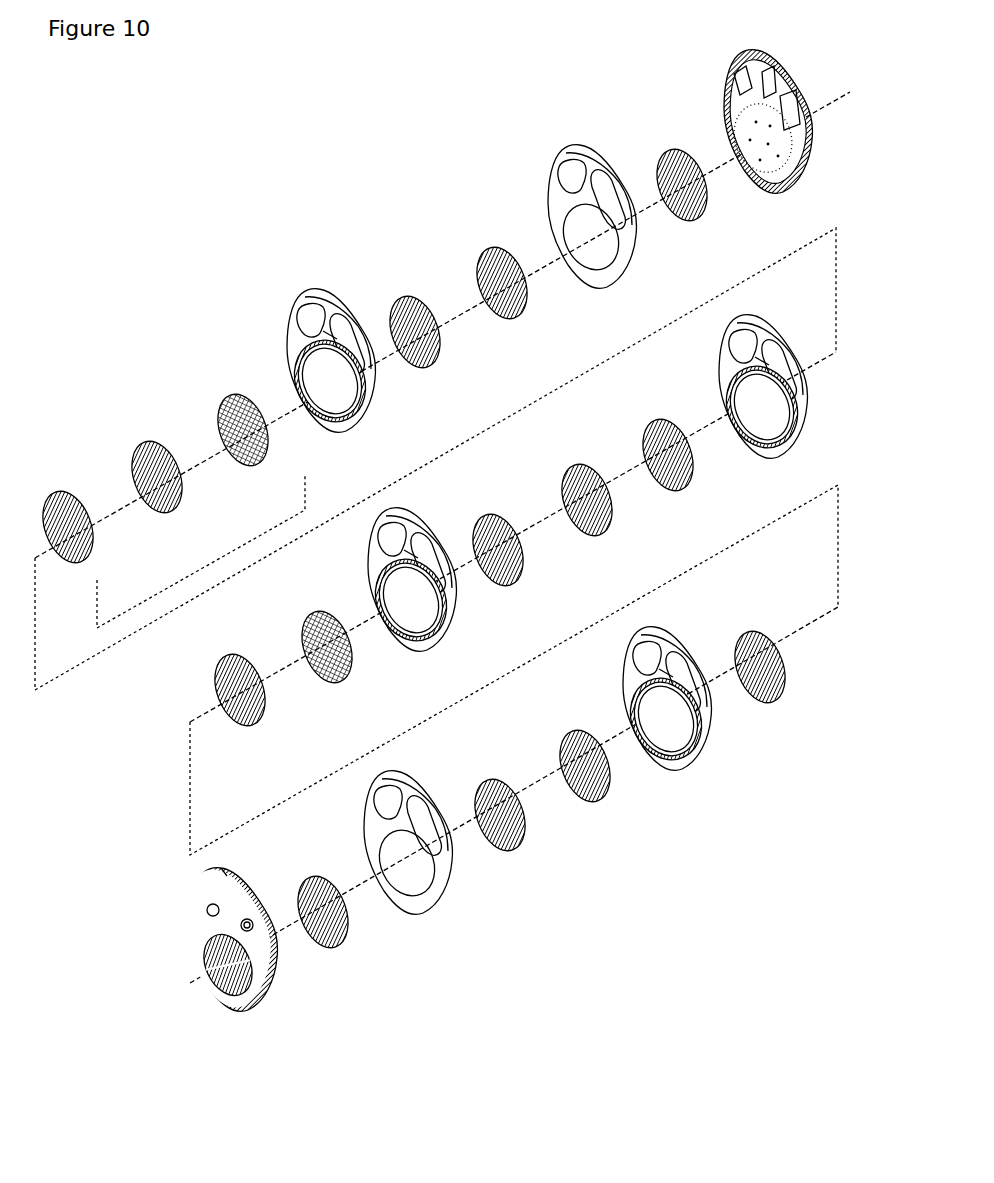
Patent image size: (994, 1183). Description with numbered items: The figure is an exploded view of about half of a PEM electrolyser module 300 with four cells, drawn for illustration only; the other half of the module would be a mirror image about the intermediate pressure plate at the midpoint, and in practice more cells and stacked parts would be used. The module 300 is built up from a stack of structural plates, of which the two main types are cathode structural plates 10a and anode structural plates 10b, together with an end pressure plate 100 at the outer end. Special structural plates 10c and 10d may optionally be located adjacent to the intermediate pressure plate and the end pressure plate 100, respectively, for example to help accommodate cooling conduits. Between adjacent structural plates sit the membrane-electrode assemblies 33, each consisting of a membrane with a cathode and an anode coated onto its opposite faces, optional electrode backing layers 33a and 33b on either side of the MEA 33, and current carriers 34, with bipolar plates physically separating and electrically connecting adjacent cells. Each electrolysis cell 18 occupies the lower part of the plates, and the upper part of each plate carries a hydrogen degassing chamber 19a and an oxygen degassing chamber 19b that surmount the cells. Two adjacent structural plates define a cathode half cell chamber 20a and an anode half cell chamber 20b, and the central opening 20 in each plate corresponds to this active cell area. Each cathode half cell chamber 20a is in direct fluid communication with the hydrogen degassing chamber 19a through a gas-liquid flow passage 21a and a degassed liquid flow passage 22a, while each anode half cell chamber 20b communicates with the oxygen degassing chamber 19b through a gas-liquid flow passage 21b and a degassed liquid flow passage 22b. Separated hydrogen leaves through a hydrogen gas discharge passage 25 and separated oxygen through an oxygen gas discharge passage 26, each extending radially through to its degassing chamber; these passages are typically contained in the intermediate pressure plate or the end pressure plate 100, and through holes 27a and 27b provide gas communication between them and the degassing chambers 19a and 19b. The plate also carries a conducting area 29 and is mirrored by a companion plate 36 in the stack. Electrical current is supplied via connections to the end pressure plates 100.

The PEM electrolyser module 300 is at (442, 537).
The end pressure plate 100 is at (788, 190).
The cathode structural plate 10a is at (775, 455).
The anode structural plate 10b is at (322, 420).
The special structural plate 10c is at (425, 908).
The special structural plate 10d is at (622, 274).
The hydrogen degassing chamber 19a is at (300, 312).
The oxygen degassing chamber 19b is at (340, 330).
The heel opening 20 is at (499, 550).
The cathode half cell chamber 20a is at (786, 452).
The anode half cell chamber 20b is at (348, 432).
The gas-liquid flow passage 21a is at (762, 368).
The gas-liquid flow passage 21b is at (342, 352).
The degassed liquid flow passage 22a is at (726, 406).
The degassed liquid flow passage 22b is at (362, 406).
The membrane-electrode assembly 33 is at (178, 504).
The electrode backing layer 33a is at (92, 556).
The electrode backing layer 33b is at (262, 462).
The current carrier 34 is at (438, 358).
The disc 36 is at (524, 312).
The electrolysis cell 18 is at (196, 1016).
The hydrogen gas discharge passage 25 is at (246, 900).
The oxygen gas discharge passage 26 is at (226, 872).
The through hole 27a is at (212, 906).
The through hole 27b is at (254, 922).
The rim 29 is at (266, 1000).